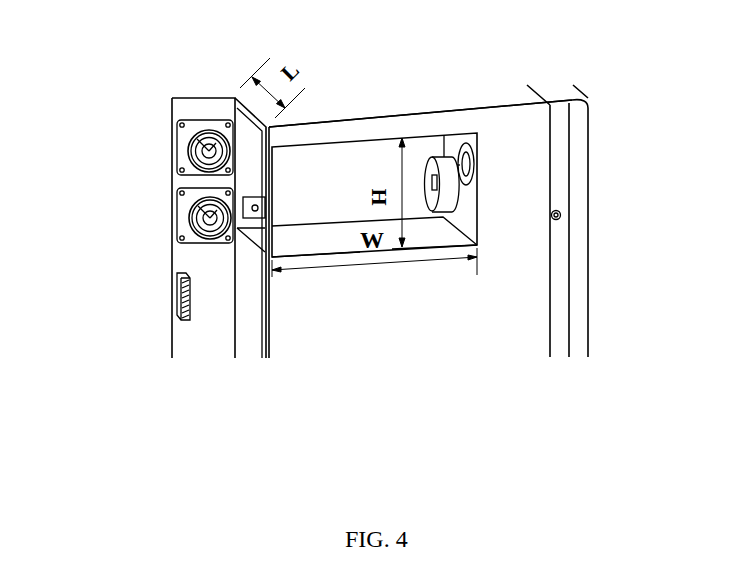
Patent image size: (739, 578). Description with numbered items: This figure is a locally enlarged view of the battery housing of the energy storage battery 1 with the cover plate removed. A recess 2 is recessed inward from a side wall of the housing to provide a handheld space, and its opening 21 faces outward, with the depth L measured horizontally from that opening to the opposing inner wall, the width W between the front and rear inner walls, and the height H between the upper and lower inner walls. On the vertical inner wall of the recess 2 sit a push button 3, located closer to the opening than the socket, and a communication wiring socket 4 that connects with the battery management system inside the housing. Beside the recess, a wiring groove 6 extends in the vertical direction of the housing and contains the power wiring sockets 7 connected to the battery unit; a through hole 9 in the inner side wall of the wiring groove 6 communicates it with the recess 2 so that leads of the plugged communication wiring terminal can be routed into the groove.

The energy storage battery 1 is at (146, 299).
The recess 2 is at (362, 165).
The opening of mounting box 21 is at (312, 143).
The push button 3 is at (473, 170).
The communication wiring socket 4 is at (450, 198).
The wiring groove 6 is at (203, 112).
The power wiring socket 7 is at (190, 162).
The through hole 9 is at (248, 168).